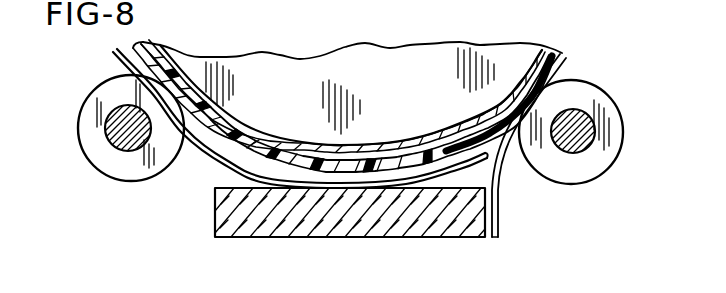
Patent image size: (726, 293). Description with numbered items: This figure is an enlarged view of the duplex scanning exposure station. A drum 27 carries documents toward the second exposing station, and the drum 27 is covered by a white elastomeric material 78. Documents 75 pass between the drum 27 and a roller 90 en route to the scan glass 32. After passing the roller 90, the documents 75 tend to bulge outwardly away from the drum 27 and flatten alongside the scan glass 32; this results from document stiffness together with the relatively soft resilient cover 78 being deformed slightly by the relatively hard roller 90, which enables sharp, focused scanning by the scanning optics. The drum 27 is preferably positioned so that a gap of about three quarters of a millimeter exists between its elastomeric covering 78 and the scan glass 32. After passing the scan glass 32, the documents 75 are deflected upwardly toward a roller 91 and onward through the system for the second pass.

The drum 27 is at (243, 114).
The scan glass 32 is at (417, 228).
The document 75 is at (470, 170).
The elastomeric material 78 is at (392, 162).
The roller 90 is at (96, 153).
The roller 91 is at (607, 167).